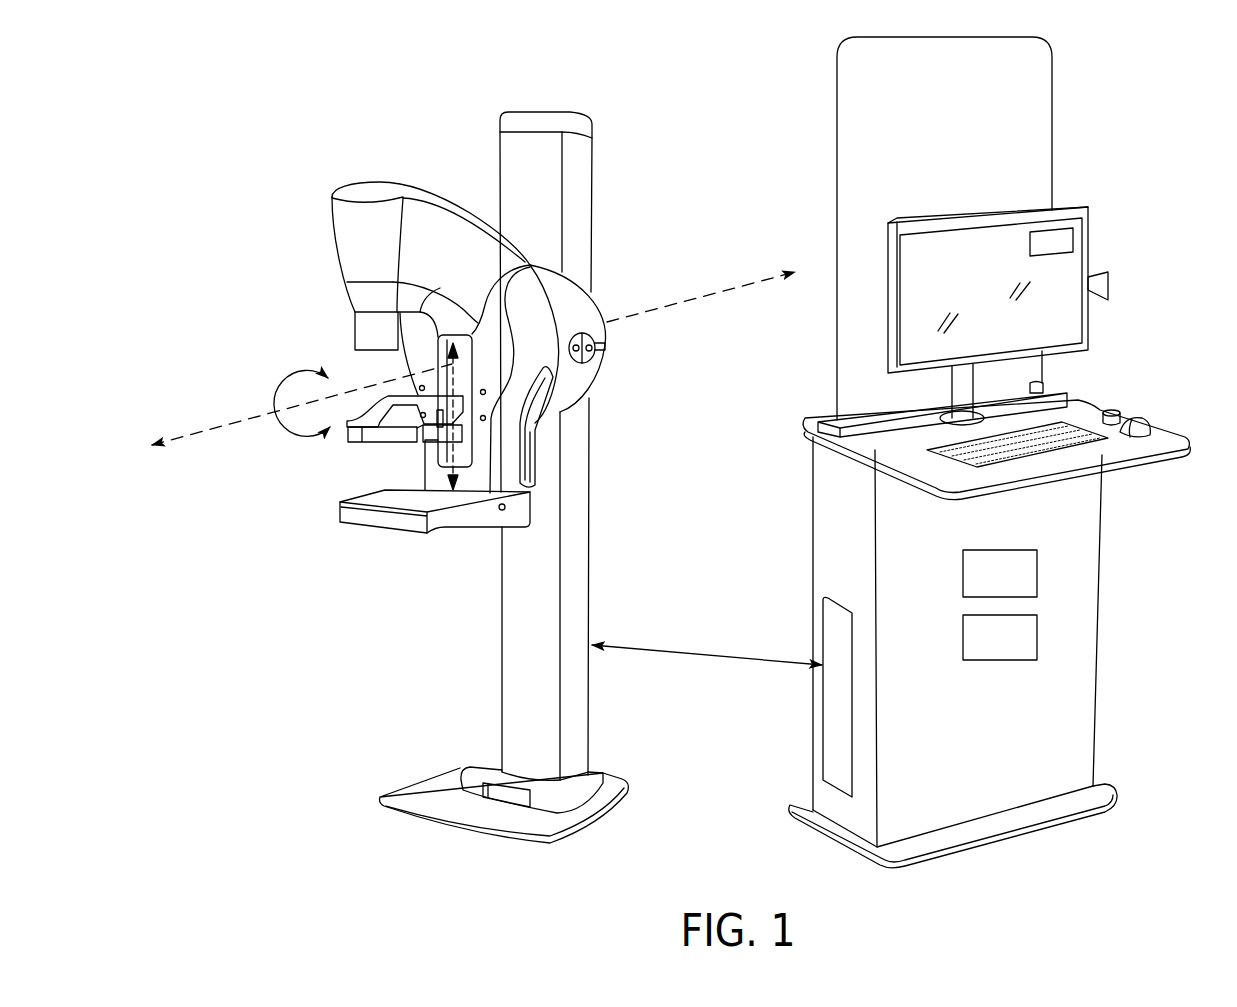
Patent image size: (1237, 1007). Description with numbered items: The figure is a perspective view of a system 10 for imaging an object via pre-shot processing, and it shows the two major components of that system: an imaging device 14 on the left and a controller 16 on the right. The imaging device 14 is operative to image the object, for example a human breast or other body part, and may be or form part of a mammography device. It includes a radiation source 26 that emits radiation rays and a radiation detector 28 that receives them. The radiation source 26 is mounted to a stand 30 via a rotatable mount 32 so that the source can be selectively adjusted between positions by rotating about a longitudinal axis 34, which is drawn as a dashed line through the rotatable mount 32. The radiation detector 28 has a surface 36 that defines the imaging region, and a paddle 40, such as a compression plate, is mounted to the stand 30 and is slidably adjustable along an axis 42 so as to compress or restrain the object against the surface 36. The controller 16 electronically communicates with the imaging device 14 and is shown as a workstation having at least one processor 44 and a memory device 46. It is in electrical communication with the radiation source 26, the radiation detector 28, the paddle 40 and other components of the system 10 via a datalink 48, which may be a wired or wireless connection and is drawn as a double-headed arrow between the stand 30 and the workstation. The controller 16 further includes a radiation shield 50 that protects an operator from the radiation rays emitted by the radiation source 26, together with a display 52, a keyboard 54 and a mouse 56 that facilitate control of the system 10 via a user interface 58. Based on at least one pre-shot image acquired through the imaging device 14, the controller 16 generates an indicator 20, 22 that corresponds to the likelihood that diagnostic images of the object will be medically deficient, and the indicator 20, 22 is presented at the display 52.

The system 10 is at (375, 108).
The imaging device 14 is at (622, 148).
The controller 16 is at (820, 106).
The indicator 20 is at (1086, 243).
The indicator 22 is at (1110, 290).
The radiation source 26 is at (356, 300).
The radiation detector 28 is at (360, 520).
The stand 30 is at (514, 157).
The rotatable mount 32 is at (538, 313).
The longitudinal axis 34 is at (705, 290).
The surface 36 is at (383, 491).
The paddle 40 is at (370, 448).
The axis 42 is at (468, 452).
The processor 44 is at (985, 589).
The memory device 46 is at (985, 653).
The datalink 48 is at (713, 648).
The radiation shield 50 is at (1036, 88).
The display 52 is at (1036, 207).
The keyboard 54 is at (1088, 445).
The mouse 56 is at (1140, 418).
The user interface 58 is at (973, 249).